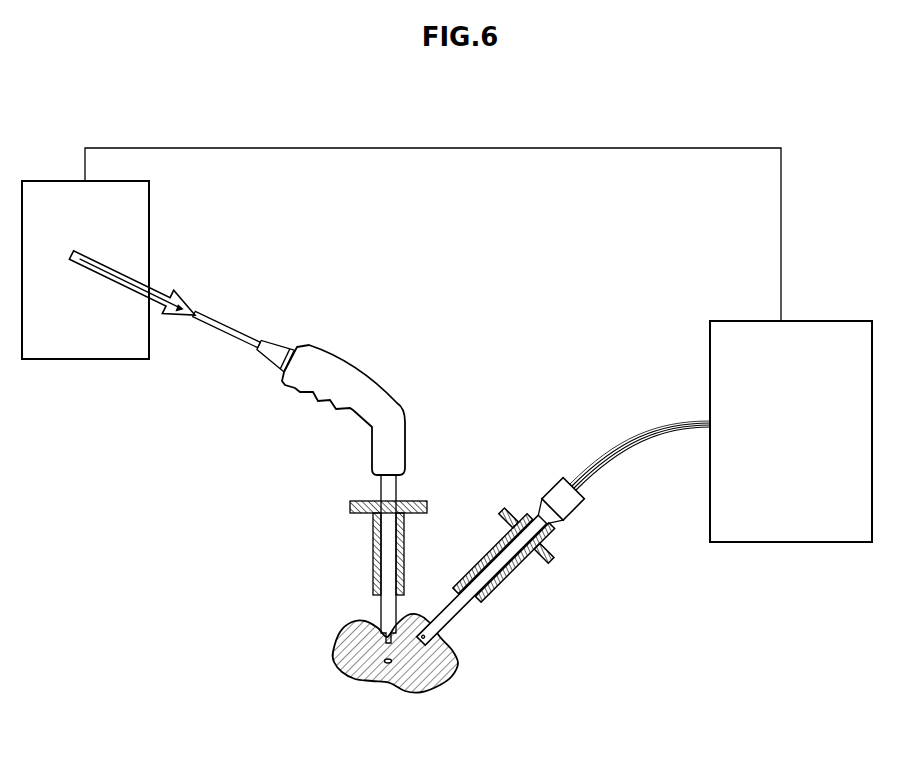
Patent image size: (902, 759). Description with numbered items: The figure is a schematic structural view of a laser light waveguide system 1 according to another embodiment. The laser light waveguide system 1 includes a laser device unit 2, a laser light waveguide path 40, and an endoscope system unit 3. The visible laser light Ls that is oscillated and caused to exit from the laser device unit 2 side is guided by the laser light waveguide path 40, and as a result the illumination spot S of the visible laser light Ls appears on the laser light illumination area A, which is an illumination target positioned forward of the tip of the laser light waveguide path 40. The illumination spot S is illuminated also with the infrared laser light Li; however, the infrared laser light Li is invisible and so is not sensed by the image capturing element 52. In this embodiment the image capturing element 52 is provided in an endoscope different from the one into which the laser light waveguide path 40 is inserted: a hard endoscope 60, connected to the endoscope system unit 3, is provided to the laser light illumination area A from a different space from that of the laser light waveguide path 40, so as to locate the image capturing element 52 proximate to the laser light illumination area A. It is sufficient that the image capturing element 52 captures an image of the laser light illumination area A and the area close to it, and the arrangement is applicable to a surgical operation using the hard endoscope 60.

The laser light waveguide system 1 is at (802, 192).
The laser device unit 2 is at (137, 227).
The endoscope system unit 3 is at (815, 340).
The laser light waveguide path 40 is at (233, 330).
The image capturing element 52 is at (440, 635).
The hard endoscope 60 is at (480, 600).
The visible laser light Ls is at (160, 288).
The infrared laser light Li is at (173, 318).
The illumination spot S is at (388, 664).
The laser light illumination area A is at (447, 683).